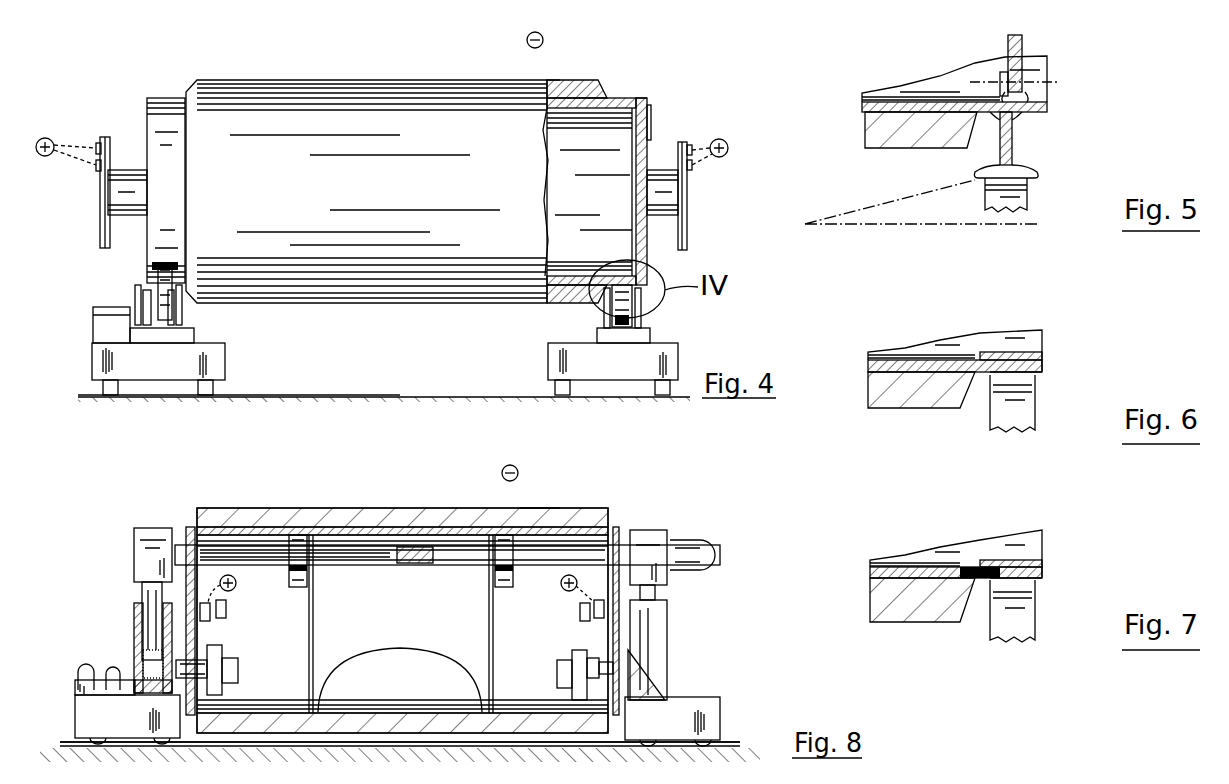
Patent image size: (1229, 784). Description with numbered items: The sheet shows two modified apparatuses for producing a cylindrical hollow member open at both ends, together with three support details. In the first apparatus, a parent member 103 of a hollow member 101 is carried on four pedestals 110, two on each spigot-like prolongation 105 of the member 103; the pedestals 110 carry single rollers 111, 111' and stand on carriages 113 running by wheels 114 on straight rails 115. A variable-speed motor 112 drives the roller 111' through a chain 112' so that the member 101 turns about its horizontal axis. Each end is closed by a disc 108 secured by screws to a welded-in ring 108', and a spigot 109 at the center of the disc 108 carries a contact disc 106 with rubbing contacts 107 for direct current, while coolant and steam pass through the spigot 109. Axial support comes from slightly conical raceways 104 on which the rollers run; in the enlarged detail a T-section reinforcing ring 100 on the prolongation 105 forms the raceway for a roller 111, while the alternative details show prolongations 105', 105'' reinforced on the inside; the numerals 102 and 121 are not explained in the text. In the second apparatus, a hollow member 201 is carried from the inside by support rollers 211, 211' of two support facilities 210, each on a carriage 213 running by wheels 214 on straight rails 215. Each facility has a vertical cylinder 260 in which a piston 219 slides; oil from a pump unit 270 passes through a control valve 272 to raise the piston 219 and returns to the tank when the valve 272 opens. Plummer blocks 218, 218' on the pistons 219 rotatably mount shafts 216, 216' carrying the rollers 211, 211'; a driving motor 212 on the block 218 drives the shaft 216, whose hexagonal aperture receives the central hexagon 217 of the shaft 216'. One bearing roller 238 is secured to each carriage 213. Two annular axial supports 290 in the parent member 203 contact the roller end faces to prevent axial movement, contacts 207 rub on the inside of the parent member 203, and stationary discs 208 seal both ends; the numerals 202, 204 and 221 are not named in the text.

In FIG. 5, the T-section reinforcing ring 100 is at (1012, 135).
In FIG. 4, the hollow member 101 is at (325, 74).
In FIG. 4, the end ring 102 is at (575, 86).
In FIG. 5, the end ring 102 is at (920, 125).
In FIG. 6, the end ring 102 is at (898, 395).
In FIG. 7, the end ring 102 is at (903, 605).
In FIG. 4, the parent member 103 is at (640, 100).
In FIG. 5, the parent member 103 is at (868, 100).
In FIG. 6, the parent member 103 is at (900, 358).
In FIG. 7, the parent member 103 is at (900, 566).
In FIG. 4, the raceways 104 is at (640, 98).
In FIG. 5, the raceways 104 is at (1032, 170).
In FIG. 6, the raceways 104 is at (1040, 374).
In FIG. 7, the raceways 104 is at (1040, 580).
In FIG. 4, the spigot-like prolongation 105 is at (172, 153).
In FIG. 5, the spigot-like prolongation 105 is at (985, 96).
In FIG. 6, the prolongation 105' is at (989, 351).
In FIG. 7, the prolongation 105'' is at (993, 557).
In FIG. 4, the contact disc 106 is at (100, 205).
In FIG. 4, the rubbing contacts 107 is at (98, 142).
In FIG. 4, the disc 108 is at (695, 107).
In FIG. 5, the disc 108 is at (1055, 61).
In FIG. 5, the welded-in ring 108' is at (1004, 58).
In FIG. 4, the spigot 109 is at (128, 170).
In FIG. 4, the pedestals 110 is at (658, 320).
In FIG. 4, the roller 111 is at (605, 301).
In FIG. 5, the roller 111 is at (1047, 200).
In FIG. 6, the roller 111 is at (1047, 410).
In FIG. 7, the roller 111 is at (1047, 615).
In FIG. 4, the roller 111' is at (105, 284).
In FIG. 4, the variable-speed motor 112 is at (113, 323).
In FIG. 4, the chain 112' is at (107, 299).
In FIG. 4, the carriages 113 is at (103, 366).
In FIG. 4, the wheels 114 is at (103, 390).
In FIG. 4, the straight rails 115 is at (214, 395).
In FIG. 4, the connection point 121 is at (562, 80).
In FIG. 8, the hollow member 201 is at (247, 505).
In FIG. 8, the drum shell 202 is at (375, 510).
In FIG. 8, the parent member 203 is at (445, 530).
In FIG. 8, the partition wall 204 is at (493, 710).
In FIG. 8, the contacts 207 is at (210, 620).
In FIG. 8, the stationary discs 208 is at (188, 528).
In FIG. 8, the support facility 210 is at (680, 612).
In FIG. 8, the support roller 211 is at (527, 577).
In FIG. 8, the support roller 211' is at (279, 577).
In FIG. 8, the driving motor 212 is at (715, 560).
In FIG. 8, the carriage 213 is at (95, 710).
In FIG. 8, the wheels 214 is at (88, 742).
In FIG. 8, the straight rails 215 is at (732, 745).
In FIG. 8, the shaft 216 is at (447, 582).
In FIG. 8, the shaft 216' is at (295, 586).
In FIG. 8, the central hexagon 217 is at (410, 566).
In FIG. 8, the plummer block 218 is at (678, 542).
In FIG. 8, the plummer block 218' is at (102, 555).
In FIG. 8, the piston 219 is at (145, 592).
In FIG. 8, the connection point 221 is at (517, 478).
In FIG. 8, the bearing roller 238 is at (222, 658).
In FIG. 8, the vertical cylinder 260 is at (136, 622).
In FIG. 8, the pump unit 270 is at (98, 660).
In FIG. 8, the control valve 272 is at (672, 672).
In FIG. 8, the annular axial supports 290 is at (340, 700).